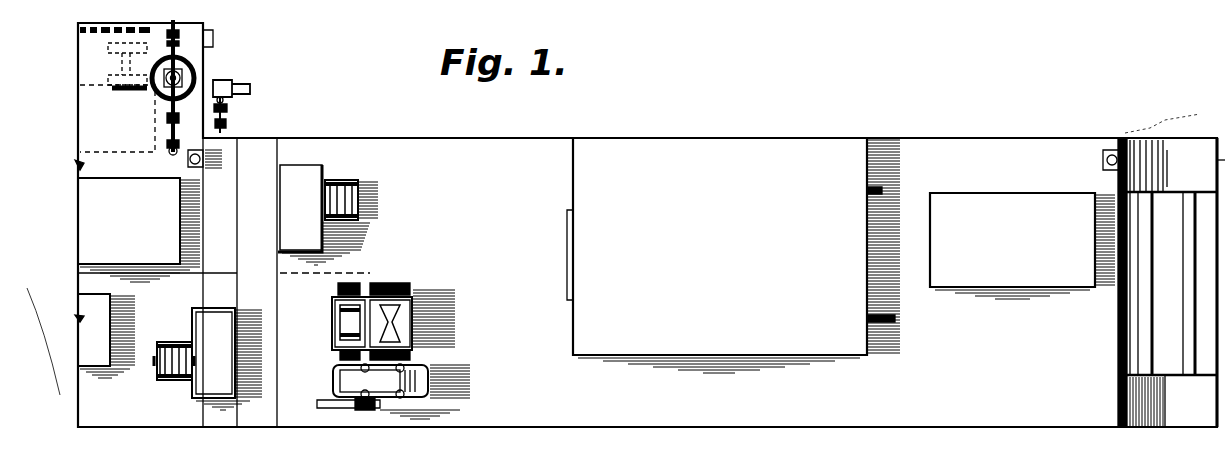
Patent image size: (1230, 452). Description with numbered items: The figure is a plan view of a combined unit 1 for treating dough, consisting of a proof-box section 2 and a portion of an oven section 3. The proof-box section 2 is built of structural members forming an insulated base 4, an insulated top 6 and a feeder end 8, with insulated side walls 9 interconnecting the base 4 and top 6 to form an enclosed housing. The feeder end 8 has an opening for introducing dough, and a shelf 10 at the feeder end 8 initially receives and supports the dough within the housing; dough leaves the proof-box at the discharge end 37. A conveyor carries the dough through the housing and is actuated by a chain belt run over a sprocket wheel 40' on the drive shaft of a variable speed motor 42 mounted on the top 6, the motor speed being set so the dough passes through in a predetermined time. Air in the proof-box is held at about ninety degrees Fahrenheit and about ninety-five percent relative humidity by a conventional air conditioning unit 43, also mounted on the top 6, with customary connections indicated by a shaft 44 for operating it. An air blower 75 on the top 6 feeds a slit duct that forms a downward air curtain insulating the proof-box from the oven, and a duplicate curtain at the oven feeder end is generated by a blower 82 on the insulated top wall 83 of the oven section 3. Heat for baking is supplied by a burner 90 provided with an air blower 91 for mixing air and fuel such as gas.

The combined unit 1 is at (277, 164).
The proof-box section 2 is at (1082, 138).
The oven section 3 is at (78, 143).
The base 4 is at (60, 290).
The top 6 is at (913, 162).
The feeder end 8 is at (1172, 215).
The side walls 9 is at (1173, 380).
The shelf 10 is at (1188, 333).
The discharge end 37 is at (282, 137).
The sprocket wheel 40' is at (372, 396).
The motor 42 is at (425, 340).
The air conditioning unit 43 is at (798, 152).
The shaft 44 is at (890, 325).
The air blower 75 is at (318, 180).
The blower 82 is at (200, 389).
The insulated top wall 83 is at (121, 417).
The burner 90 is at (212, 84).
The air blower 91 is at (108, 90).